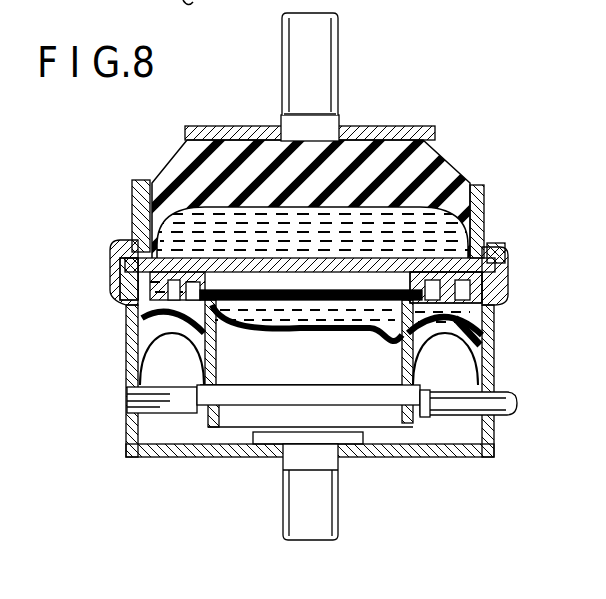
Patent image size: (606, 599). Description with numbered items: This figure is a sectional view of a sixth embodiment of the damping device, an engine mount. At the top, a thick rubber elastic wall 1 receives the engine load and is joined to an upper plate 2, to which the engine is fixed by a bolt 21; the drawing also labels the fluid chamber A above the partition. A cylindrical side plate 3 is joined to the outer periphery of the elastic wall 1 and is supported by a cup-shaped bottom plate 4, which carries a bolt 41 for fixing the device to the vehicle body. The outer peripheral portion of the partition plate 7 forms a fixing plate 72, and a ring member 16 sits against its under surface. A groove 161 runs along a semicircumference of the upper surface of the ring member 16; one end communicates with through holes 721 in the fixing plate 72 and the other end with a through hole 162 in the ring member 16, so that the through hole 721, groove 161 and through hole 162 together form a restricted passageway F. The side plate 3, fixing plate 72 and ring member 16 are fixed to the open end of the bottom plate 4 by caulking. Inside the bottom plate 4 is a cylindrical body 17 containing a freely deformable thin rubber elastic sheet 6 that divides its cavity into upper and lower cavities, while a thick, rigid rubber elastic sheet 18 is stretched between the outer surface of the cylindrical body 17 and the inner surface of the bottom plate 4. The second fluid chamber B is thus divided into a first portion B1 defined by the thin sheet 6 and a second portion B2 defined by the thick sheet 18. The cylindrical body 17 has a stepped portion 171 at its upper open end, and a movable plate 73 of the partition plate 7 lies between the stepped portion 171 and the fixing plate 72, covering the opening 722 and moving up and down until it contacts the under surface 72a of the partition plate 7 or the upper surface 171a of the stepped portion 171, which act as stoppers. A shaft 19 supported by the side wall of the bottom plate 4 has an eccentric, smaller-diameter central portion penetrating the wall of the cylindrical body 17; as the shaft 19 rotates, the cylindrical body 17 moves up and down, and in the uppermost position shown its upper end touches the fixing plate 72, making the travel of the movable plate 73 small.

The rubber elastic wall 1 is at (430, 168).
The upper plate 2 is at (420, 132).
The bolt 21 is at (322, 70).
The side plate 3 is at (482, 195).
The bottom plate 4 is at (385, 448).
The bolt 41 is at (298, 503).
The rubber elastic sheet 6 is at (335, 330).
The partition plate 7 is at (415, 266).
The fixing plate 72 is at (490, 258).
The under surface 72a is at (223, 292).
The through holes 721 is at (165, 273).
The opening 722 is at (340, 272).
The movable plate 73 is at (310, 292).
The ring member 16 is at (498, 308).
The groove 161 is at (500, 272).
The through hole 162 is at (482, 322).
The cylindrical body 17 is at (425, 412).
The stepped portion 171 is at (190, 330).
The upper surface 171a is at (112, 283).
The rubber elastic sheet 18 is at (447, 328).
The shaft 19 is at (470, 410).
The main fluid chamber A is at (330, 185).
The second fluid chamber B is at (292, 325).
The first portion B1 is at (250, 325).
The second portion B2 is at (465, 350).
The restricted passageway F is at (112, 265).